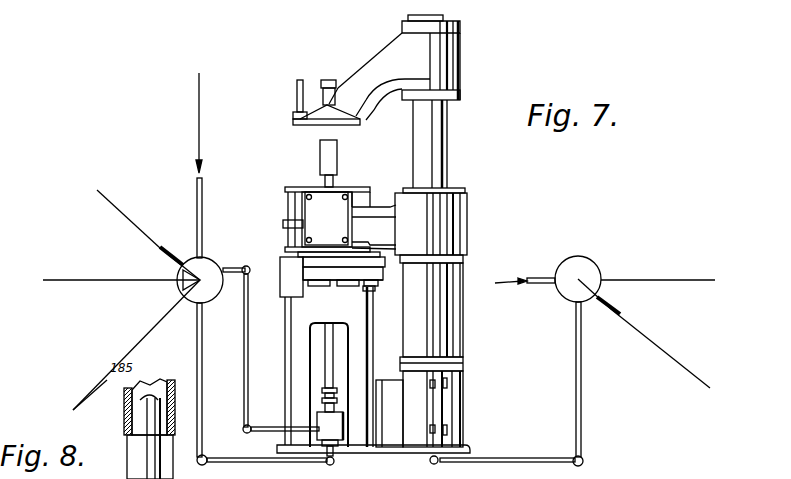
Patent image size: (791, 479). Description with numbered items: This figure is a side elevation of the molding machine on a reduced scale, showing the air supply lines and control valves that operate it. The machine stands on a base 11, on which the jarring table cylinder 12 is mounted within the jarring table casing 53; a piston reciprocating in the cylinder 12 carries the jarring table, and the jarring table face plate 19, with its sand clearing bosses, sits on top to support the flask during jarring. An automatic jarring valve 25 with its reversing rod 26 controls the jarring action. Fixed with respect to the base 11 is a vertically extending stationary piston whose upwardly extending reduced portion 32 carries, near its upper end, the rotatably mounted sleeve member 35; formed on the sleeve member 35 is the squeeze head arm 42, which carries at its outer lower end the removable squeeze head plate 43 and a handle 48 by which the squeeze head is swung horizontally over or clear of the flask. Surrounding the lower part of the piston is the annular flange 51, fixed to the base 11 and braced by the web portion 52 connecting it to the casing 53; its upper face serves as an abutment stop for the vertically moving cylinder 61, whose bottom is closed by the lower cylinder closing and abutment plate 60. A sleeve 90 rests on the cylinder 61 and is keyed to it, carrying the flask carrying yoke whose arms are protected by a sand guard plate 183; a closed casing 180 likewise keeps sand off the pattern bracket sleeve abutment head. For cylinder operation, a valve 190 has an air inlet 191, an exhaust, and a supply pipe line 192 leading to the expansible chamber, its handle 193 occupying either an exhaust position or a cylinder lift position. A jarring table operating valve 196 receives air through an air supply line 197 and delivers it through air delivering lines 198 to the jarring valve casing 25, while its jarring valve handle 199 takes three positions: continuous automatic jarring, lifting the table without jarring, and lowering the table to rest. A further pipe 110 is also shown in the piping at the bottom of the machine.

The base 11 is at (415, 454).
The jarring table cylinder 12 is at (318, 372).
The jarring table face plate 19 is at (285, 265).
The automatic jarring valve 25 is at (340, 450).
The reversing rod 26 is at (333, 352).
The reduced portion of piston 32 is at (447, 155).
The sleeve member 35 is at (461, 61).
The squeeze head arm 42 is at (382, 51).
The squeeze head plate 43 is at (300, 126).
The handle 48 is at (297, 99).
The annular flange 51 is at (463, 400).
The web portion 52 is at (392, 385).
The jarring table casing 53 is at (293, 314).
The lower cylinder closing and abutment plate 60 is at (445, 368).
The cylinder 61 is at (458, 322).
The sleeve 90 is at (467, 228).
The pipe 110 is at (218, 472).
The closed casing 180 is at (333, 156).
The sand guard plate 183 is at (312, 211).
The valve 190 is at (587, 270).
The air inlet 191 is at (531, 278).
The supply pipe line 192 is at (581, 393).
The handle 193 is at (620, 306).
The jarring table operating valve 196 is at (193, 258).
The air supply line 197 is at (200, 226).
The air delivering lines 198 is at (245, 375).
The jarring valve handle 199 is at (164, 250).